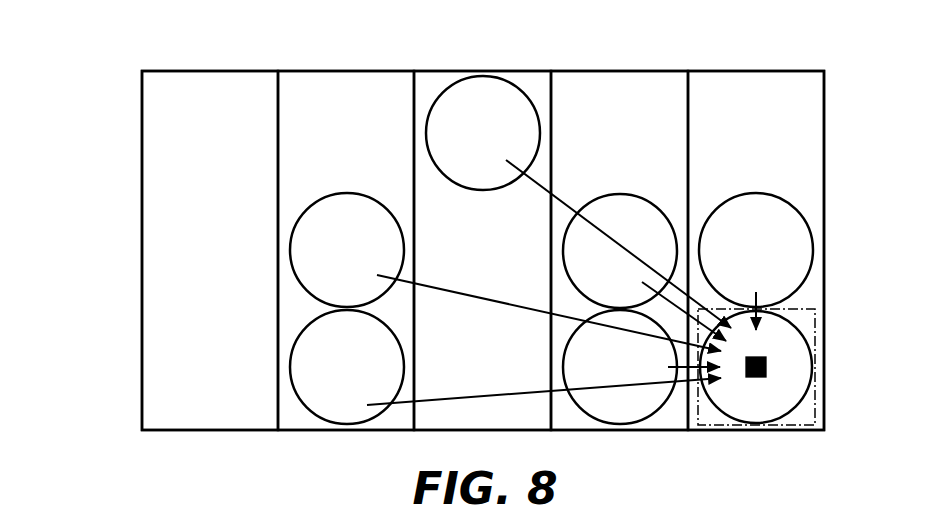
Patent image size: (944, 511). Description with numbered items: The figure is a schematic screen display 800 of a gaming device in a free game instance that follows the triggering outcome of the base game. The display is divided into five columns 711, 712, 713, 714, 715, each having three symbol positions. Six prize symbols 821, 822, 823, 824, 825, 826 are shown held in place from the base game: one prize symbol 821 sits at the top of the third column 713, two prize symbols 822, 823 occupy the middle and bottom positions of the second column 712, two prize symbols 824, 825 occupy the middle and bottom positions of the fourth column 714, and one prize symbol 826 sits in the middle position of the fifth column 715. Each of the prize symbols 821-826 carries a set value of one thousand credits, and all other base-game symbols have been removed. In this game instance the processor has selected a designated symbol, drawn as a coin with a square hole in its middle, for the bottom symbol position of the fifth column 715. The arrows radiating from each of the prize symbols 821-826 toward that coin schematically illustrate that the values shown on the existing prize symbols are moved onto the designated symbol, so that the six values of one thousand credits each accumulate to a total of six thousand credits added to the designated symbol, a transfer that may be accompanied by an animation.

The screen display 800 is at (92, 54).
The first column 711 is at (210, 68).
The second column 712 is at (345, 68).
The third column 713 is at (483, 68).
The fourth column 714 is at (620, 68).
The fifth column 715 is at (756, 68).
The prize symbol 821 is at (426, 120).
The prize symbol 822 is at (290, 240).
The prize symbol 823 is at (291, 348).
The prize symbol 824 is at (564, 232).
The prize symbol 825 is at (564, 348).
The prize symbol 826 is at (814, 250).